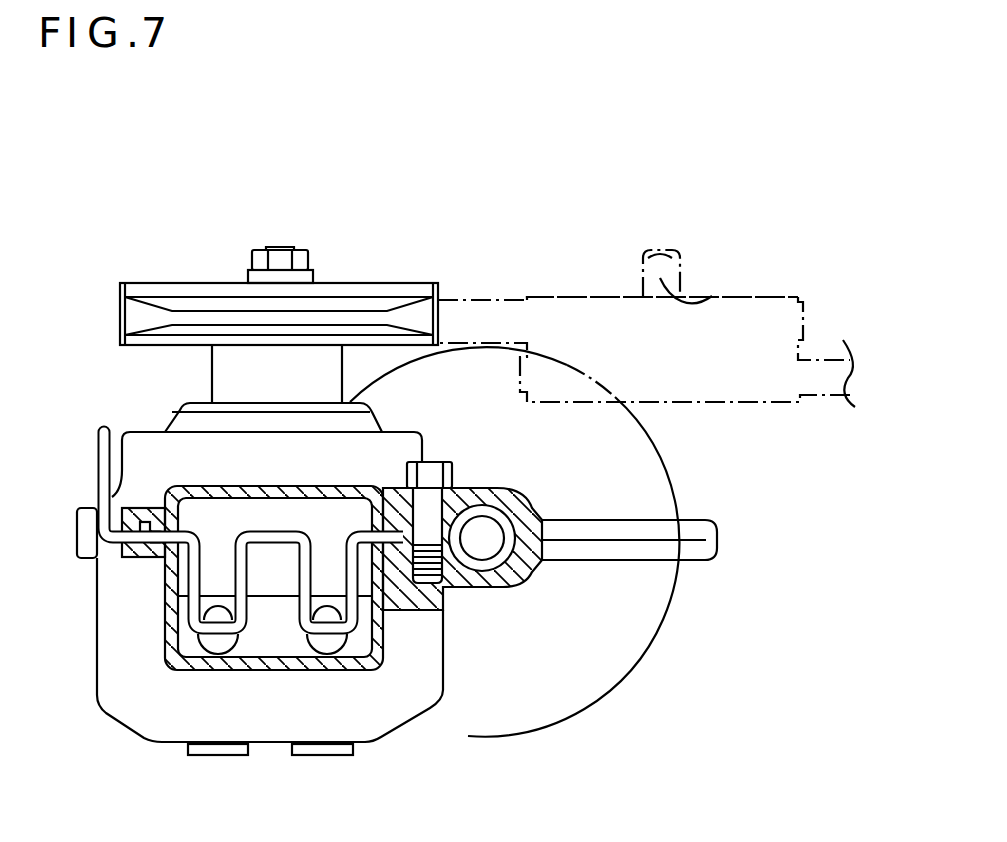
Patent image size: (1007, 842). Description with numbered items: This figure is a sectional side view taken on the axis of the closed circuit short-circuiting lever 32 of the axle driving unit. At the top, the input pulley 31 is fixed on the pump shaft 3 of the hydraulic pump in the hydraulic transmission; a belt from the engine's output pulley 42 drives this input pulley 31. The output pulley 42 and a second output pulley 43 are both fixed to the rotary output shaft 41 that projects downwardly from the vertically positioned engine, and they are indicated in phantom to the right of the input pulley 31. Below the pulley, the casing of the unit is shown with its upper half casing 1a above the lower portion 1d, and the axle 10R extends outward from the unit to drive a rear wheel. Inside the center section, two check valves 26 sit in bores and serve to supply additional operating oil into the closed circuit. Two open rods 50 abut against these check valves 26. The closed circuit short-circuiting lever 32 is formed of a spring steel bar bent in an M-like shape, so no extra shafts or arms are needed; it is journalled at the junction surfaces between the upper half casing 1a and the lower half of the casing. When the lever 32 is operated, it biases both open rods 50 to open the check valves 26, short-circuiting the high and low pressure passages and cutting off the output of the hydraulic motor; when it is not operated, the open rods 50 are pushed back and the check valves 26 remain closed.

The input pulley 31 is at (192, 284).
The pump shaft 3 is at (282, 247).
The closed circuit short-circuiting lever 32 is at (98, 428).
The upper half casing 1a is at (382, 435).
The housing 1d is at (143, 736).
The open rod 50 is at (300, 638).
The check valve 26 is at (330, 645).
The axle 10R is at (480, 562).
The output pulley 42 is at (550, 296).
The rotary output shaft 41 is at (712, 298).
The output pulley 43 is at (695, 402).